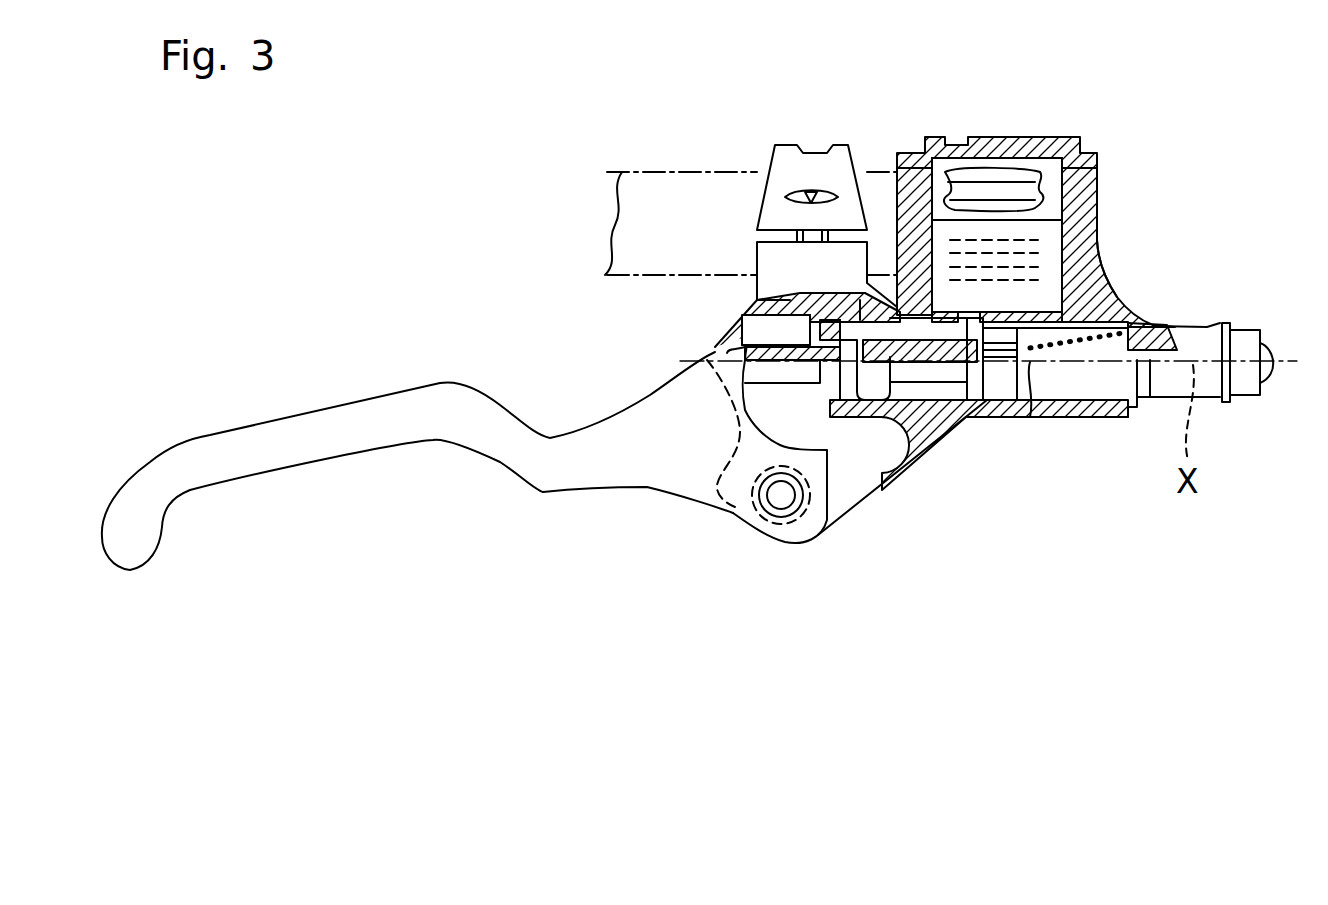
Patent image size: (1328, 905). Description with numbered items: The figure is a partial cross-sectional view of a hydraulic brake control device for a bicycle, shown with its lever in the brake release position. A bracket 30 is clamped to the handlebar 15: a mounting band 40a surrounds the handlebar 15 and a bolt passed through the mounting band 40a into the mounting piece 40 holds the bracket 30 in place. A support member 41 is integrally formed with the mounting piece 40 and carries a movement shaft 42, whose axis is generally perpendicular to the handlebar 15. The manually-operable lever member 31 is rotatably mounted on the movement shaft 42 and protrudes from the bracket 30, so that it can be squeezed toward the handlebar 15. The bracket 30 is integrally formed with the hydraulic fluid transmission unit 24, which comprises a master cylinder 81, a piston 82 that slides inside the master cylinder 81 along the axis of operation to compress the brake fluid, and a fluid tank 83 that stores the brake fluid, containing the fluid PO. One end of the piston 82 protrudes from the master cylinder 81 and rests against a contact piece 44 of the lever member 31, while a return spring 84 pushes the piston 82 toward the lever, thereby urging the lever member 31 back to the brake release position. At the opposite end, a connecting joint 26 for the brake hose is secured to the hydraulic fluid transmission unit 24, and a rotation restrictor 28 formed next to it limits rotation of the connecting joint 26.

The handlebar 15 is at (655, 187).
The mounting band 40a is at (780, 157).
The mounting piece 40 is at (837, 263).
The piston 82 is at (745, 330).
The lever member 31 is at (453, 412).
The support member 41 is at (848, 487).
The movement shaft 42 is at (778, 503).
The contact piece 44 is at (727, 353).
The bracket 30 is at (938, 477).
The fluid tank 83 is at (1098, 160).
The reservoir oil PO is at (1002, 248).
The hydraulic fluid transmission unit 24 is at (1122, 278).
The master cylinder 81 is at (942, 390).
The return spring 84 is at (1110, 332).
The rotation restrictor 28 is at (1225, 323).
The connecting joint 26 is at (1252, 338).